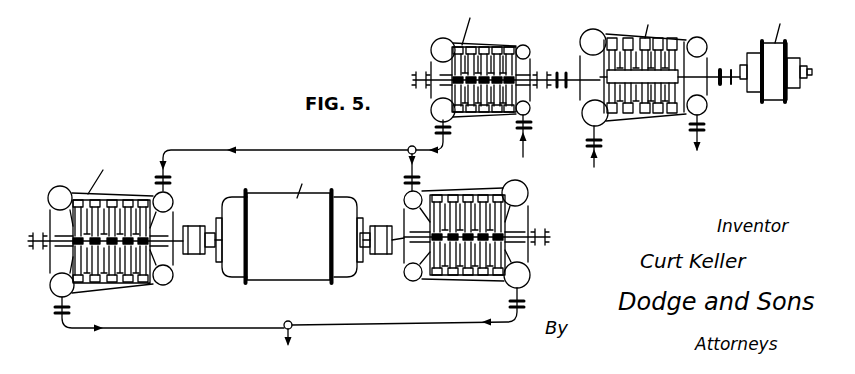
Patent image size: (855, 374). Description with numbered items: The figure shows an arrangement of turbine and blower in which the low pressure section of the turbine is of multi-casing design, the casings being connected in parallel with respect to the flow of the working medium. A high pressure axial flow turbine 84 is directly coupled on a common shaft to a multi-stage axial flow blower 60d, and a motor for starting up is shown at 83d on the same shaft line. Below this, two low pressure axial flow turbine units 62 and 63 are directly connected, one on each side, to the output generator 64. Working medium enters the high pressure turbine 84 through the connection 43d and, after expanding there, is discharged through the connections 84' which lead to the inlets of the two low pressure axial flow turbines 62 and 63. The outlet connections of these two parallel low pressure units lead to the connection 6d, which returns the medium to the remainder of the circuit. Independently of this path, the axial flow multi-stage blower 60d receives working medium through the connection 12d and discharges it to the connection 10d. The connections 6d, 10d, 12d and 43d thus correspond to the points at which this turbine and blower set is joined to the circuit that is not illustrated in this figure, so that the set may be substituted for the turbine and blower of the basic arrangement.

The high pressure axial flow turbine 84 is at (506, 61).
The discharge connections 84' is at (303, 155).
The working medium inlet connection 43d is at (539, 138).
The multi-stage axial flow blower 60d is at (652, 117).
The blower inlet connection 12d is at (609, 152).
The blower discharge connection 10d is at (714, 136).
The starting motor 83d is at (778, 93).
The low pressure axial flow turbine unit 63 is at (107, 195).
The output generator 64 is at (317, 266).
The low pressure axial flow turbine unit 62 is at (467, 190).
The low pressure turbine outlet connection 6d is at (289, 324).